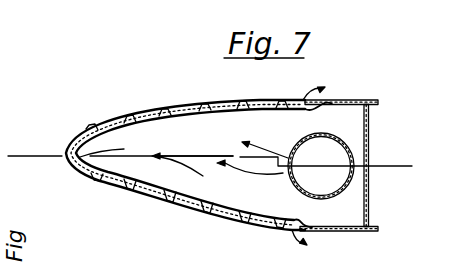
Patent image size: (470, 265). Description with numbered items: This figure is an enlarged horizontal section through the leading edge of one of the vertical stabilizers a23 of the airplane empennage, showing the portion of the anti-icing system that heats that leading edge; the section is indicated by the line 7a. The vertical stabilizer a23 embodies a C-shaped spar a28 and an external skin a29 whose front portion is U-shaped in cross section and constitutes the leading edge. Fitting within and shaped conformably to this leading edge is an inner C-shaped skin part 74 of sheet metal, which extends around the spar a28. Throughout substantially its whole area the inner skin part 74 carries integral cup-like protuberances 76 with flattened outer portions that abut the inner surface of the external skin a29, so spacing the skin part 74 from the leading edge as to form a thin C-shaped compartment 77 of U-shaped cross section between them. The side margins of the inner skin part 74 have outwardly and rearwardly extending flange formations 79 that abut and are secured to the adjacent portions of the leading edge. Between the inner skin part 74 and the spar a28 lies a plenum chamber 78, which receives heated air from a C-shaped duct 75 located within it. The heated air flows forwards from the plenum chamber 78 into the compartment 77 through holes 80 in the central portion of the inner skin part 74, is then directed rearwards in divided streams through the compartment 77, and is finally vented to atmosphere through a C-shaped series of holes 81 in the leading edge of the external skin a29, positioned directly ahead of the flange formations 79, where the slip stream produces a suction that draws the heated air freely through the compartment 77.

The cup-like protuberances 76 is at (118, 117).
The C-shaped compartments 77 is at (151, 118).
The external skins a29 is at (173, 110).
The inner C-shaped skin parts 74 is at (150, 122).
The holes 81 is at (296, 98).
The flange formations 79 is at (331, 100).
The vertical stabilizers a23 is at (359, 95).
The C-shaped spars a28 is at (372, 117).
The section line 7a is at (25, 165).
The holes 80 is at (70, 160).
The C-shaped ducts 75 is at (346, 188).
The plenum chambers 78 is at (340, 212).